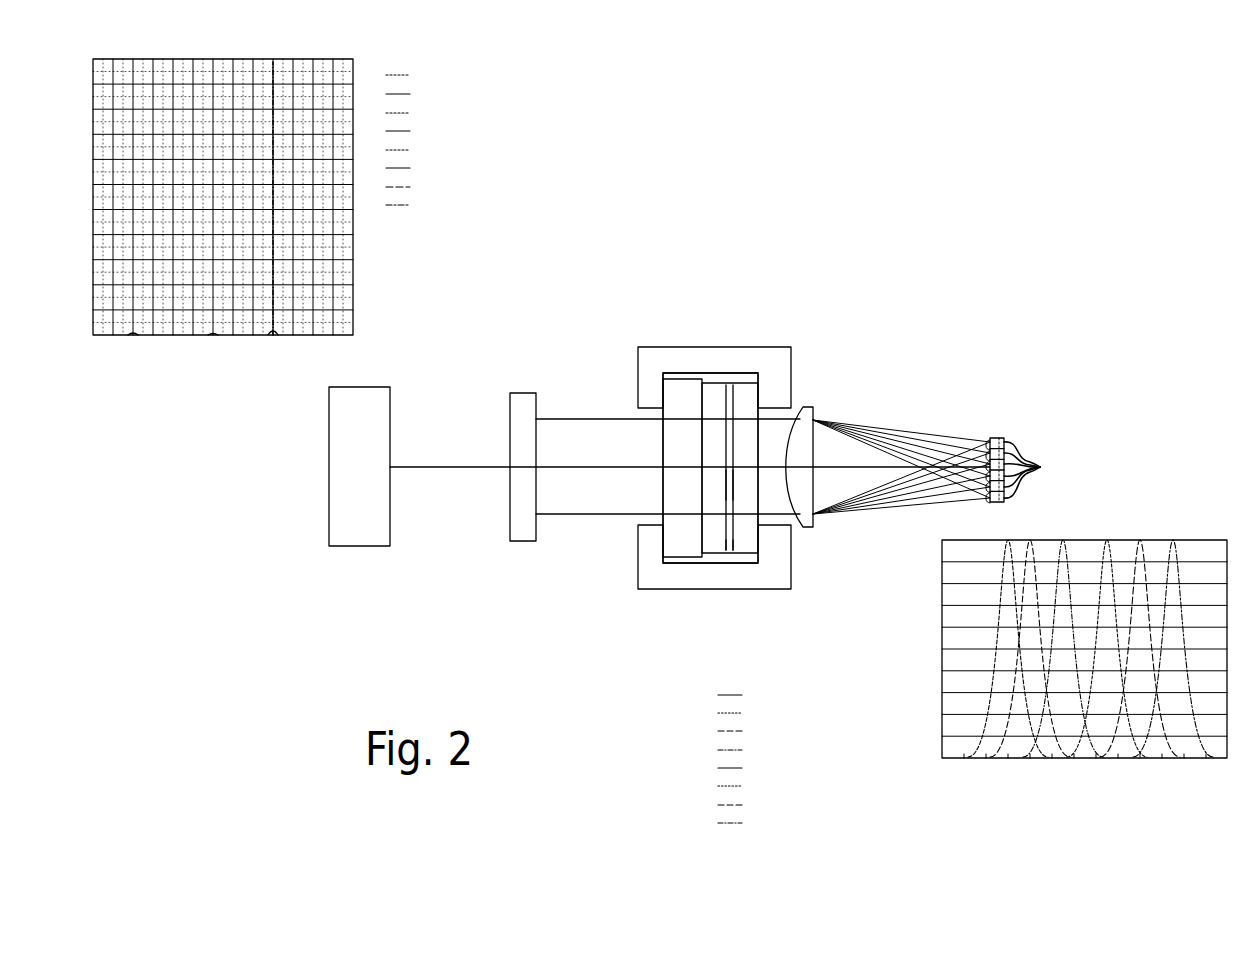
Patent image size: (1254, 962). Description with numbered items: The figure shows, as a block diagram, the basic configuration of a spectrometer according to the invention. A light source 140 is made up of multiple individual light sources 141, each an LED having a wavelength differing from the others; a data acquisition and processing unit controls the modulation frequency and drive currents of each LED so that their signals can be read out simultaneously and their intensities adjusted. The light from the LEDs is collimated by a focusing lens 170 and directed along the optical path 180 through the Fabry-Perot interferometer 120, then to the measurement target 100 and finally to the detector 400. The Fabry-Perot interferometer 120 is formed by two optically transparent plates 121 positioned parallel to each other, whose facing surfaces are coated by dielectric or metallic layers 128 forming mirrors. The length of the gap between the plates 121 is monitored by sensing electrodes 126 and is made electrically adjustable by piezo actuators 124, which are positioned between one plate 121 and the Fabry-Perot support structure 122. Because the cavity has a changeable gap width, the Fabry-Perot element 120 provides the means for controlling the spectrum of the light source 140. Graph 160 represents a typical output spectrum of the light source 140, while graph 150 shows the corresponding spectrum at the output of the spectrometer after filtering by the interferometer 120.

The measurement target 100 is at (510, 530).
The Fabry-Perot interferometer 120 is at (768, 340).
The optically transparent plates 121 is at (750, 404).
The Fabry-Perot support structure 122 is at (640, 584).
The piezo actuators 124 is at (672, 543).
The sensing electrodes 126 is at (745, 542).
The dielectric or metallic layers 128 is at (735, 478).
The light source 140 is at (1000, 437).
The individual light sources 141 is at (1038, 470).
The graph 150 is at (353, 275).
The graph 160 is at (1157, 538).
The focusing lens 170 is at (815, 413).
The optical path 180 is at (598, 484).
The detector 400 is at (333, 480).